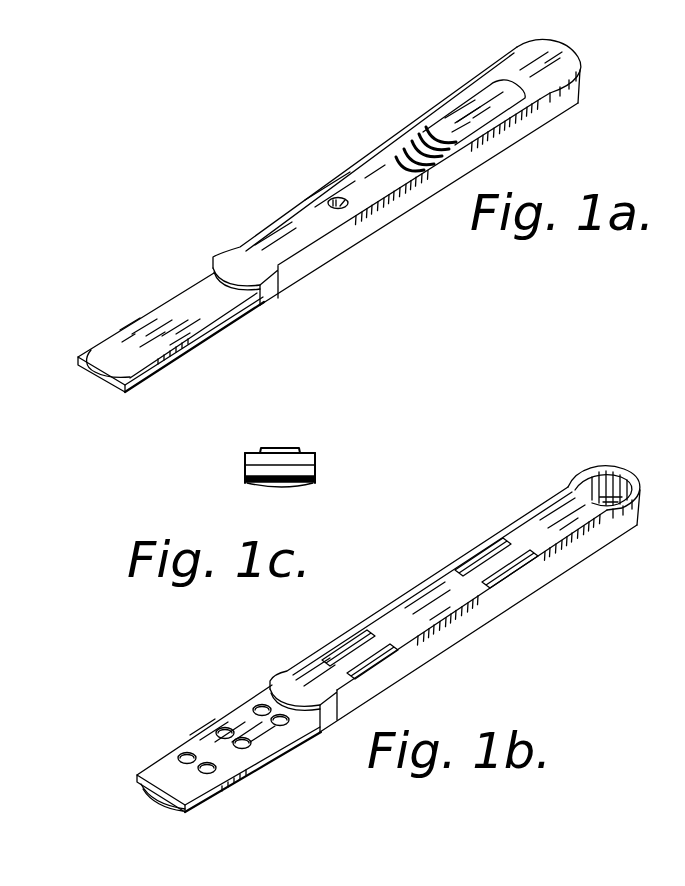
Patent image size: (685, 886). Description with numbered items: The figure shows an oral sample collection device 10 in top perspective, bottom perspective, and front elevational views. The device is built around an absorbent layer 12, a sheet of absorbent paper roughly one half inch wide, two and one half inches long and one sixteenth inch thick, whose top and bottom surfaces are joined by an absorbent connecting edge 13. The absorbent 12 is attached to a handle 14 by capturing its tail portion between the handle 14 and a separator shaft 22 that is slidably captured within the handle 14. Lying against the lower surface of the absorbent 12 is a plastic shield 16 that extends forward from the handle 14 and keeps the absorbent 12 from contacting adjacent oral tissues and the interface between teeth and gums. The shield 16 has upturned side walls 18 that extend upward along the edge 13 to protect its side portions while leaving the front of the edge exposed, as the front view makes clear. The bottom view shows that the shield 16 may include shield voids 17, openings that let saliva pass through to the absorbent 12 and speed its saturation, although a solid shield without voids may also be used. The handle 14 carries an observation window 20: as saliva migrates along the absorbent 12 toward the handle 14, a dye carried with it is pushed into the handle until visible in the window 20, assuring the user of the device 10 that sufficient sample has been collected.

In FIG. 1A, the oral sample collection device 10 is at (246, 186).
In FIG. 1B, the absorbent layer 12 is at (160, 798).
In FIG. 1A, the absorbent connecting edge 13 is at (100, 375).
In FIG. 1C, the absorbent connecting edge 13 is at (296, 464).
In FIG. 1A, the handle 14 is at (581, 92).
In FIG. 1C, the handle 14 is at (288, 488).
In FIG. 1B, the handle 14 is at (627, 525).
In FIG. 1A, the shield 16 is at (278, 337).
In FIG. 1C, the shield 16 is at (262, 487).
In FIG. 1B, the shield 16 is at (165, 770).
In FIG. 1B, the shield voids 17 is at (256, 706).
In FIG. 1A, the side walls 18 is at (142, 380).
In FIG. 1C, the side walls 18 is at (245, 469).
In FIG. 1B, the side walls 18 is at (205, 791).
In FIG. 1A, the observation window 20 is at (349, 203).
In FIG. 1A, the separator shaft 22 is at (463, 110).
In FIG. 1C, the separator shaft 22 is at (262, 452).